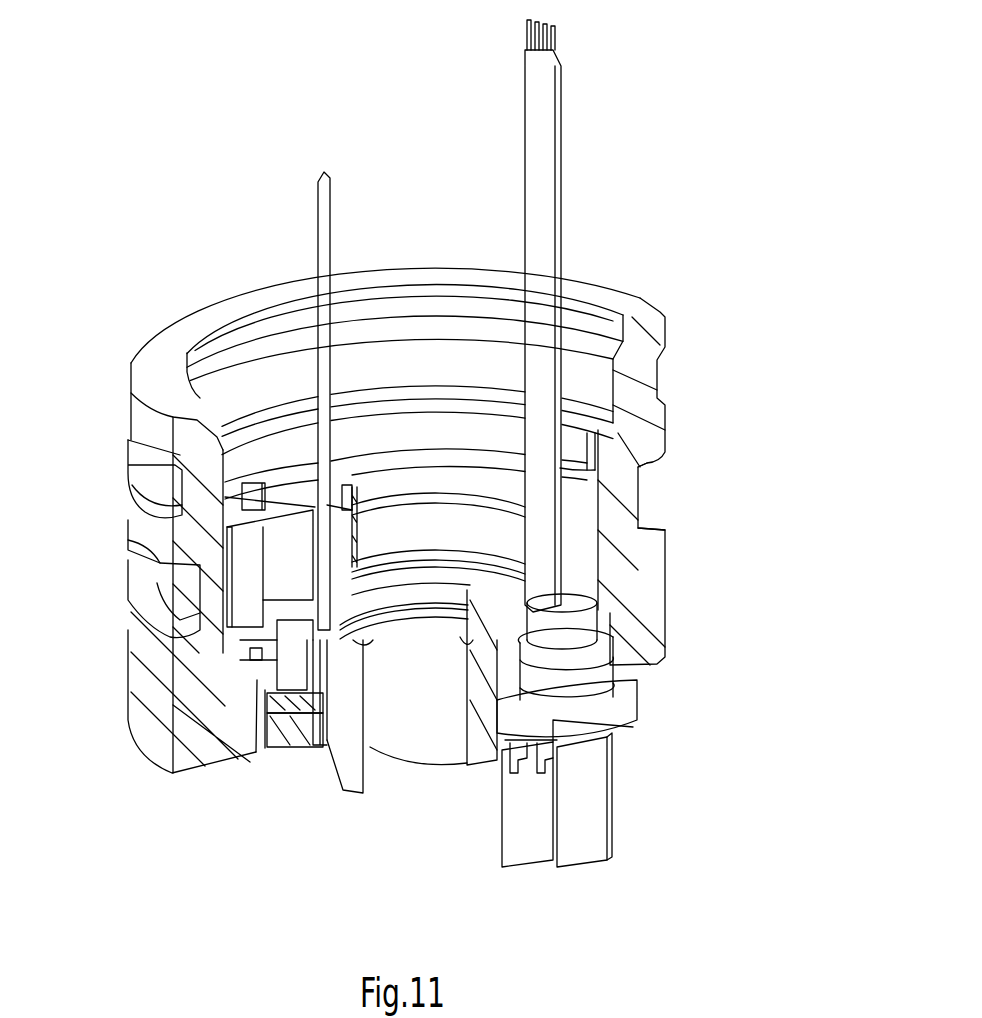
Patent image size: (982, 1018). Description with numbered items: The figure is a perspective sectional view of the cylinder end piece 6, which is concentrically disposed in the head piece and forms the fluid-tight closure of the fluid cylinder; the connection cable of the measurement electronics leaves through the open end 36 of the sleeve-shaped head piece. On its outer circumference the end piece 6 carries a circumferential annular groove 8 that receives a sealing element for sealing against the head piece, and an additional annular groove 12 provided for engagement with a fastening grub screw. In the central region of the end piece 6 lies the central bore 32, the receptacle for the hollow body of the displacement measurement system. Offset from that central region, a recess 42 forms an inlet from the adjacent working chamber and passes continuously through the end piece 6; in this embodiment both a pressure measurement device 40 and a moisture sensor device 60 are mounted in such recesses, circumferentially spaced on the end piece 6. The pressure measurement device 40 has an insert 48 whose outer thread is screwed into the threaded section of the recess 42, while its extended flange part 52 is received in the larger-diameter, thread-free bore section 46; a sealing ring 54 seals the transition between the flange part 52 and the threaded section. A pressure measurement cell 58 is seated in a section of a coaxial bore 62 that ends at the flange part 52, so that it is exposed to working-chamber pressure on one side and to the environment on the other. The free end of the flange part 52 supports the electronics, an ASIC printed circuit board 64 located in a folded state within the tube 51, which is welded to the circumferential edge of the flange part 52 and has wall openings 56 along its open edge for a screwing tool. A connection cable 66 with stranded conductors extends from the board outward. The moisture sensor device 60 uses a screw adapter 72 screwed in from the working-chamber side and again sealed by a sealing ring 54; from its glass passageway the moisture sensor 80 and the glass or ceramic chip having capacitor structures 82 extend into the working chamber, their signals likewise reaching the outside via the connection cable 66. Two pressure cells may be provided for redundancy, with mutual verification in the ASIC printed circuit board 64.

The cylinder end piece 6 is at (652, 557).
The circumferential annular groove 8 is at (180, 468).
The additional annular groove 12 is at (160, 570).
The central bore 32 is at (370, 747).
The open end 36 is at (157, 355).
The pressure measurement device 40 is at (270, 780).
The recess 42 is at (252, 745).
The thread-free bore section 46 is at (245, 657).
The insert 48 is at (240, 620).
The tube 51 is at (357, 542).
The flange part 52 is at (248, 650).
The sealing ring 54 is at (630, 693).
The wall openings 56 is at (262, 488).
The pressure measurement cell 58 is at (305, 738).
The moisture sensor device 60 is at (652, 750).
The coaxial bore 62 is at (313, 680).
The ASIC printed circuit board 64 is at (382, 641).
The connection cable 66 is at (318, 196).
The screw adapter 72 is at (580, 658).
The moisture sensor 80 is at (580, 818).
The glass or ceramic chip having capacitor structures 82 is at (537, 835).